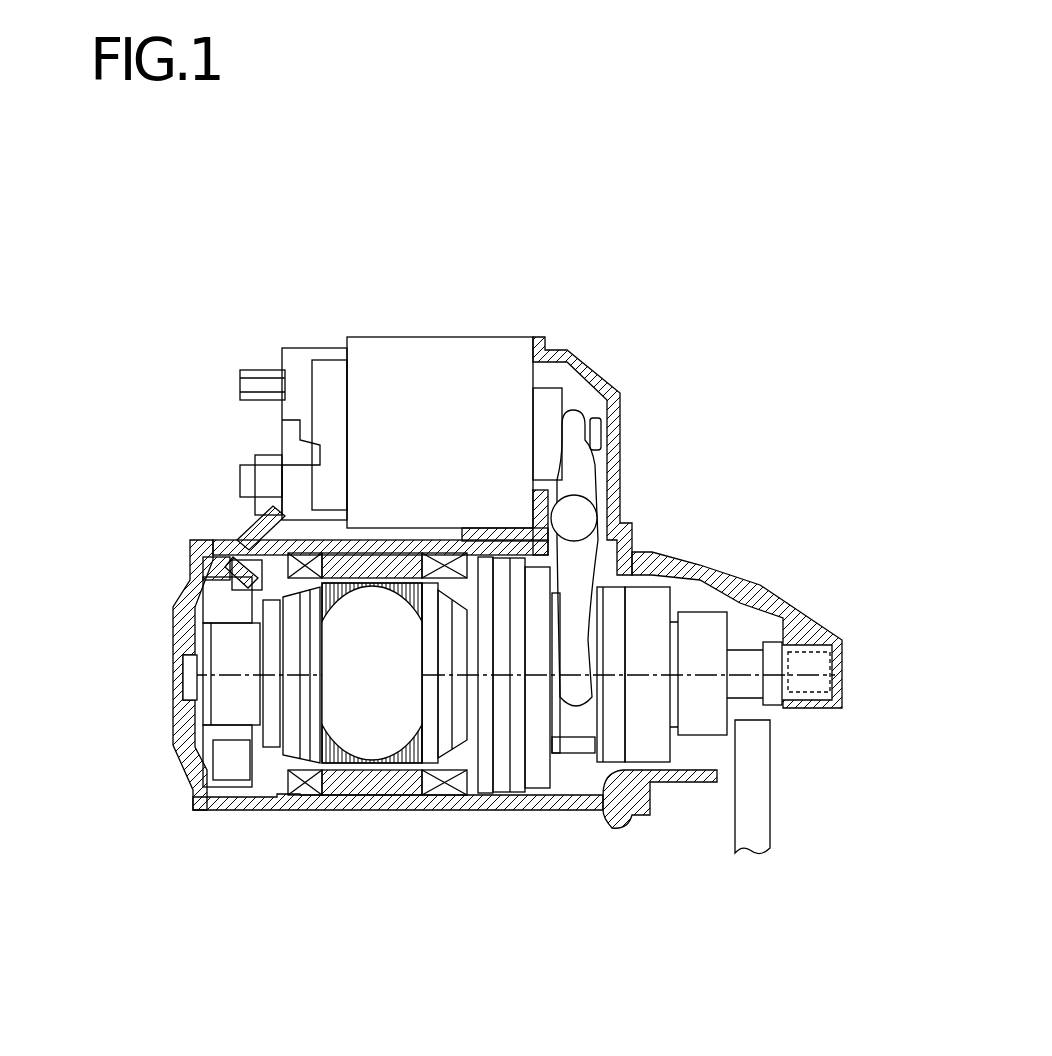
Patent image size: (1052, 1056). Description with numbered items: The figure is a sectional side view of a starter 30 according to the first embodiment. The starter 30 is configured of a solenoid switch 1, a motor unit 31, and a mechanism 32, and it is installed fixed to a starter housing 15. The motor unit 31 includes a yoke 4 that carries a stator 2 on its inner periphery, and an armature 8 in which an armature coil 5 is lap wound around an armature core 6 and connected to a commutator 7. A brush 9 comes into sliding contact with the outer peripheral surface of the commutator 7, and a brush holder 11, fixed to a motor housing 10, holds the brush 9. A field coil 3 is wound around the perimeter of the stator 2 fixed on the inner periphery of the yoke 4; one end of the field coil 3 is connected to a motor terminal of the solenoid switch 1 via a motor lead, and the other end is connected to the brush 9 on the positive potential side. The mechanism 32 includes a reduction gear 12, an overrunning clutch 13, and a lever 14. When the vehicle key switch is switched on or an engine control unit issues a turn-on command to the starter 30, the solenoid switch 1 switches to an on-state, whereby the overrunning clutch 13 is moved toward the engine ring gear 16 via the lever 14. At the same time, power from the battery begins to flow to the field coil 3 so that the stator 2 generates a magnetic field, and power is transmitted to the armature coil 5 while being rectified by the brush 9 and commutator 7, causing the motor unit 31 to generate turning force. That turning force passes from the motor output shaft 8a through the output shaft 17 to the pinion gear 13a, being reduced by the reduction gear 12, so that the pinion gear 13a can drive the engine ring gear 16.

The solenoid switch 1 is at (420, 392).
The stator 2 is at (342, 795).
The field coil 3 is at (423, 773).
The yoke 4 is at (293, 800).
The armature coil 5 is at (488, 535).
The armature core 6 is at (360, 643).
The commutator 7 is at (215, 657).
The armature 8 is at (310, 640).
The motor output shaft 8a is at (466, 790).
The brush 9 is at (232, 762).
The motor housing 10 is at (187, 760).
The brush holder 11 is at (262, 745).
The reduction gear 12 is at (512, 713).
The overrunning clutch 13 is at (643, 717).
The pinion gear 13a is at (708, 722).
The lever 14 is at (577, 568).
The starter housing 15 is at (735, 582).
The engine ring gear 16 is at (757, 808).
The output shaft 17 is at (793, 668).
The starter 30 is at (657, 278).
The motor unit 31 is at (178, 770).
The mechanism 32 is at (555, 826).